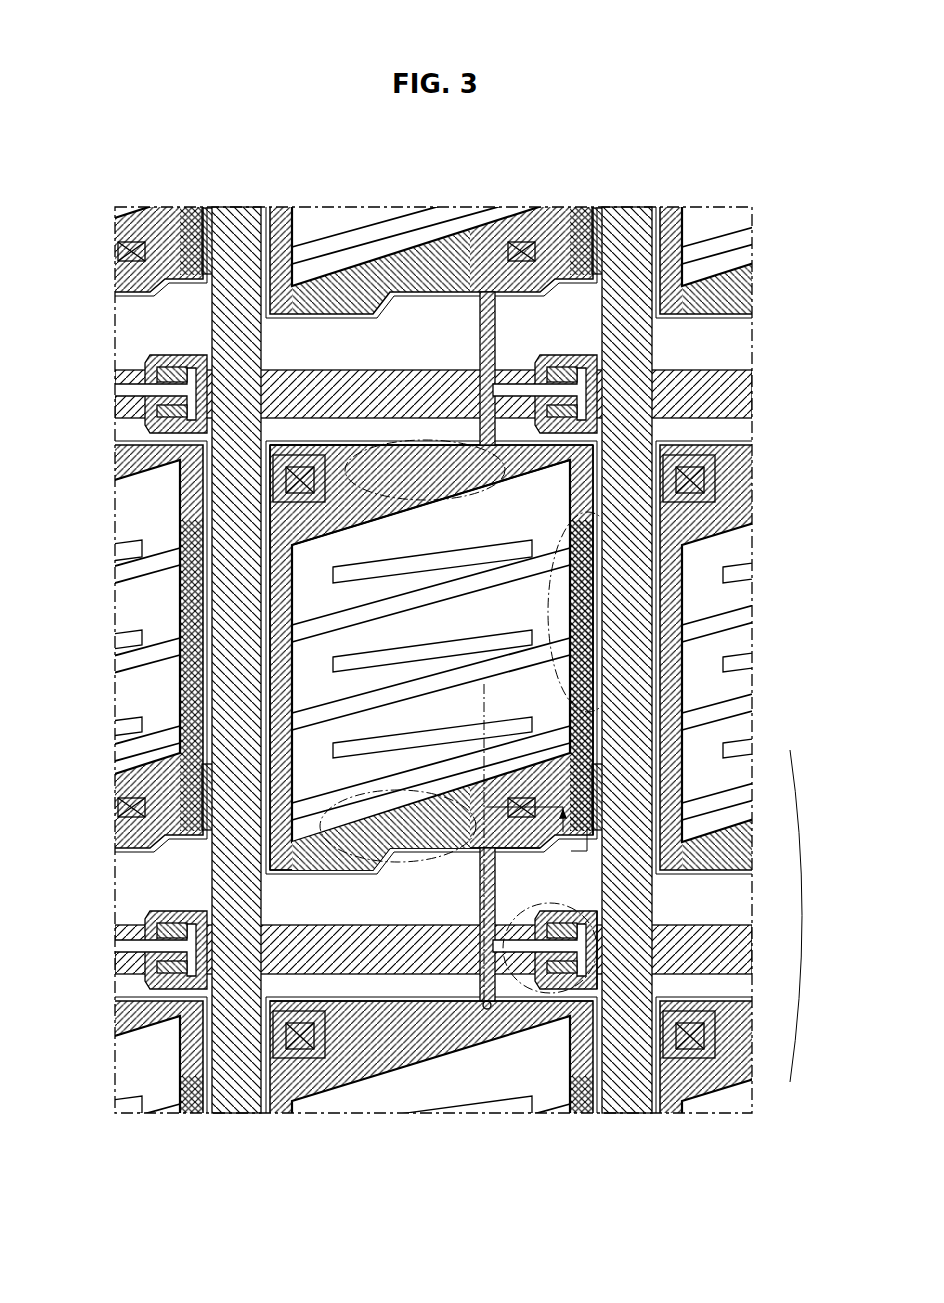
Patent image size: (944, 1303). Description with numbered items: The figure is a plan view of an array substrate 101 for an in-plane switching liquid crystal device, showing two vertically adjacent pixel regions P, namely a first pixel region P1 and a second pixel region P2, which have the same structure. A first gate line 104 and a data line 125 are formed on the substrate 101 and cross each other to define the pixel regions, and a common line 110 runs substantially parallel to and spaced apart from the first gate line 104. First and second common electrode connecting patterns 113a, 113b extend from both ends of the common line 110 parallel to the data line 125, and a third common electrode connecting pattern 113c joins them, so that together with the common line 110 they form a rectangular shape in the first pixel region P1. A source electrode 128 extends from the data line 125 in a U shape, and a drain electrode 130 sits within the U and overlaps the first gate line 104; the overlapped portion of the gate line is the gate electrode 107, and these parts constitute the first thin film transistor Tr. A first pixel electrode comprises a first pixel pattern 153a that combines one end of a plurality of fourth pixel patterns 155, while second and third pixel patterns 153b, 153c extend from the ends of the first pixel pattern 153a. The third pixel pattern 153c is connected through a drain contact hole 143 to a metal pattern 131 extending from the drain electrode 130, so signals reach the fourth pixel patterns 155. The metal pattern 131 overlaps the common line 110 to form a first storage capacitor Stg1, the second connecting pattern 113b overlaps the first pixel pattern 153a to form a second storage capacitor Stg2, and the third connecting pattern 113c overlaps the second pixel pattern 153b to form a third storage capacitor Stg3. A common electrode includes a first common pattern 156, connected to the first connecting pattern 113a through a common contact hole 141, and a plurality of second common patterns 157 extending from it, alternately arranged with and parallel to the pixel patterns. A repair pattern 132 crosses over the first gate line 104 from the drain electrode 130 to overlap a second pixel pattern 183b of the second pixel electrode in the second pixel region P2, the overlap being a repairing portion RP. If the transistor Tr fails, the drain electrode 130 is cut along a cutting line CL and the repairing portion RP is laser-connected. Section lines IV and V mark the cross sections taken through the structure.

The array substrate 101 is at (588, 168).
The first gate line 104 is at (308, 924).
The gate electrode 107 is at (497, 955).
The common line 110 is at (270, 862).
The first common electrode connecting pattern 113a is at (270, 659).
The second common electrode connecting pattern 113b is at (590, 625).
The third common electrode connecting pattern 113c is at (312, 437).
The data line 125 is at (220, 703).
The source electrode 128 is at (603, 942).
The drain electrode 130 is at (528, 930).
The metal pattern 131 is at (568, 928).
The repair pattern 132 is at (496, 331).
The common contact hole 141 is at (280, 473).
The drain contact hole 143 is at (529, 793).
The first pixel pattern 153a is at (590, 676).
The second pixel pattern 153b is at (388, 432).
The third pixel pattern 153c is at (405, 865).
The fourth pixel patterns 155 is at (493, 695).
The first common pattern 156 is at (283, 572).
The second common patterns 157 is at (368, 782).
The second pixel pattern of second pixel electrode 183b is at (358, 998).
The first storage capacitor Stg1 is at (335, 815).
The second storage capacitor Stg2 is at (548, 611).
The third storage capacitor Stg3 is at (398, 506).
The cutting line CL is at (562, 928).
The first thin film transistor Tr is at (618, 946).
The pixel regions P is at (806, 916).
The first pixel region P1 is at (578, 738).
The second pixel region P2 is at (572, 1082).
The repairing portion RP is at (472, 1011).
The section line IV is at (478, 684).
The section line V is at (502, 1018).